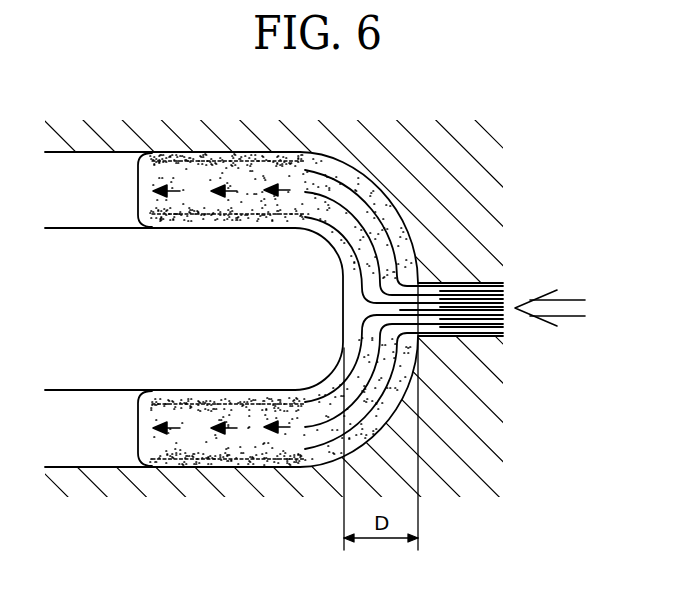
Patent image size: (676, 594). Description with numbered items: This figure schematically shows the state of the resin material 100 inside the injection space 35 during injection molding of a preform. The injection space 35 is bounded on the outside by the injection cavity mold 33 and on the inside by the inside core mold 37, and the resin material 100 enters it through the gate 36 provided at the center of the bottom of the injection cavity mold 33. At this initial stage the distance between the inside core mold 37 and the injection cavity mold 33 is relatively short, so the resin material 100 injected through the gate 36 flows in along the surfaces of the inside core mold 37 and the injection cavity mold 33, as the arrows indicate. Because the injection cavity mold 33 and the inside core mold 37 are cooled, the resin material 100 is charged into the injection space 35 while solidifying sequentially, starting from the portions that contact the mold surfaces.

The injection cavity mold 33 is at (395, 133).
The injection space 35 is at (100, 167).
The gate 36 is at (482, 280).
The inside core mold 37 is at (107, 368).
The resin material 100 is at (208, 176).